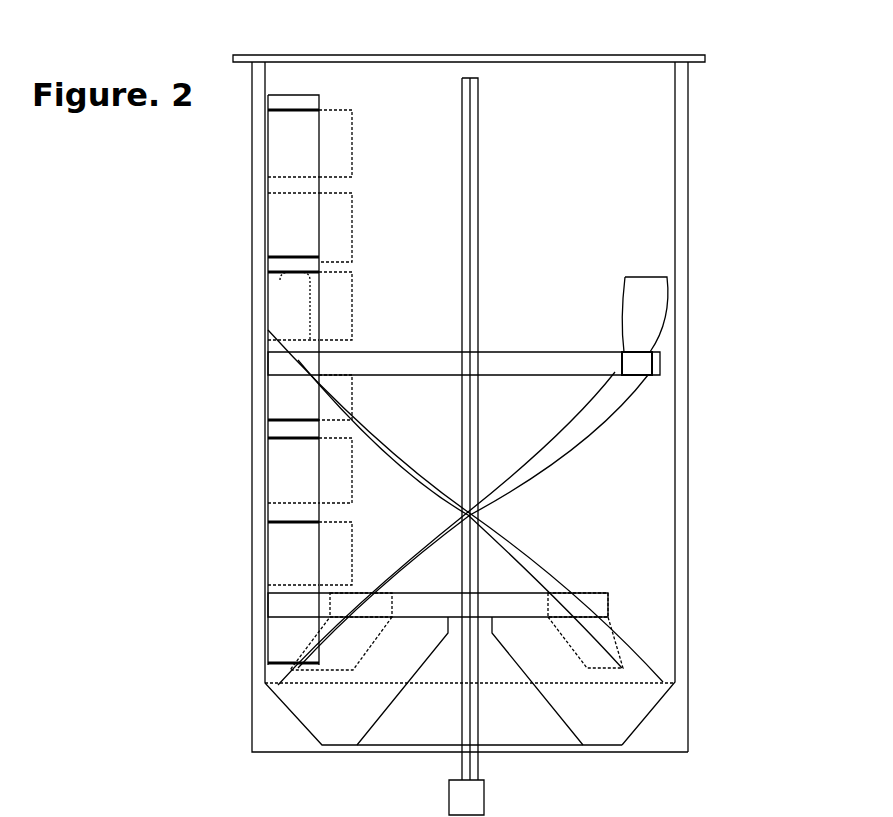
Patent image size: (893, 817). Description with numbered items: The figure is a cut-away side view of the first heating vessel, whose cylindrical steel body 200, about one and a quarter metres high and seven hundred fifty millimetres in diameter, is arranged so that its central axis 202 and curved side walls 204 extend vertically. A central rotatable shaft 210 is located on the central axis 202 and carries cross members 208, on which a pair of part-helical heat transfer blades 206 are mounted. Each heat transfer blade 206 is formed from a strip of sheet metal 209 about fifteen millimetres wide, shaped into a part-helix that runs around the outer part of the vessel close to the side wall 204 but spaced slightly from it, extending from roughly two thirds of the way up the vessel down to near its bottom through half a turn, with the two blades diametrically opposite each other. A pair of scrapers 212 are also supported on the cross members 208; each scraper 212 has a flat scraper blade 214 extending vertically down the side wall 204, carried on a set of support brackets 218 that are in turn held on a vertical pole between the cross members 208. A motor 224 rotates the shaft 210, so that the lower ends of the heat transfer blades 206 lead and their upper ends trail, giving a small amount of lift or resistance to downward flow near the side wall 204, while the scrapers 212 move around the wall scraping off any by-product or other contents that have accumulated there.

The cylindrical steel body 200 is at (680, 528).
The central axis 202 is at (468, 100).
The side wall 204 is at (678, 168).
The heat transfer blade 206 is at (647, 313).
The cross member 208 is at (528, 355).
The strip of sheet metal 209 is at (615, 390).
The central rotatable shaft 210 is at (477, 155).
The scraper 212 is at (288, 142).
The scraper blade 214 is at (292, 217).
The support bracket 218 is at (330, 226).
The motor 224 is at (483, 798).